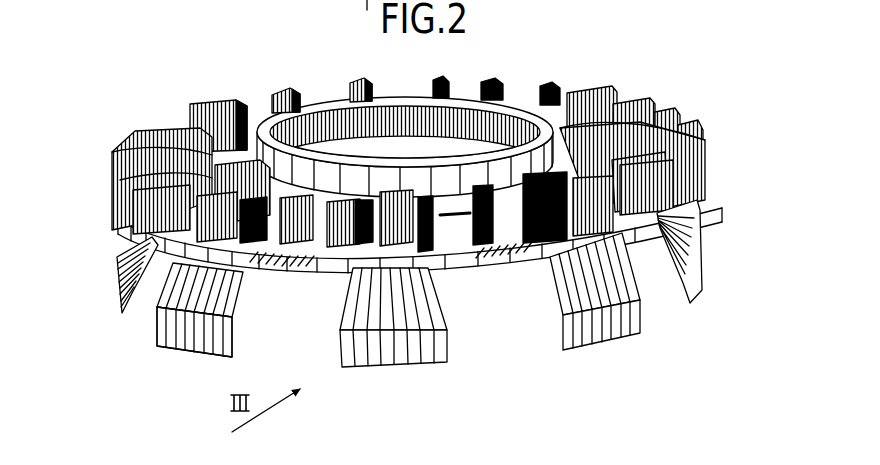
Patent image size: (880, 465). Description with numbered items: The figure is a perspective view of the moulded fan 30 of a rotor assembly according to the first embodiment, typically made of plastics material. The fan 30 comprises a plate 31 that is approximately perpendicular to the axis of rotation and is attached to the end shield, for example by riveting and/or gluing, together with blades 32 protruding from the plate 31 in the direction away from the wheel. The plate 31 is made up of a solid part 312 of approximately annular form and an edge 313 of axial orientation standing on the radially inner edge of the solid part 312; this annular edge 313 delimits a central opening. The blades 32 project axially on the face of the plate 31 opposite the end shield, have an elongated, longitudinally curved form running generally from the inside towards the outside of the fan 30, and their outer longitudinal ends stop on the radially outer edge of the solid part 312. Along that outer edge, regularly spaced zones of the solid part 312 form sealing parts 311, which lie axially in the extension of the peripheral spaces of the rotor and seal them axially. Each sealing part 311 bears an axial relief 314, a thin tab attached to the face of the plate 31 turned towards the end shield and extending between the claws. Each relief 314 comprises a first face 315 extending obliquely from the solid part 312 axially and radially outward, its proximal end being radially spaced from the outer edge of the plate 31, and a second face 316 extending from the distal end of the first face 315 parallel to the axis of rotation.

The fan 30 is at (632, 90).
The plate 31 is at (456, 268).
The blades 32 is at (117, 177).
The sealing parts 311 is at (205, 238).
The solid part 312 is at (512, 98).
The edge 313 is at (268, 148).
The axial relief 314 is at (152, 344).
The first face 315 is at (187, 290).
The second face 316 is at (195, 342).